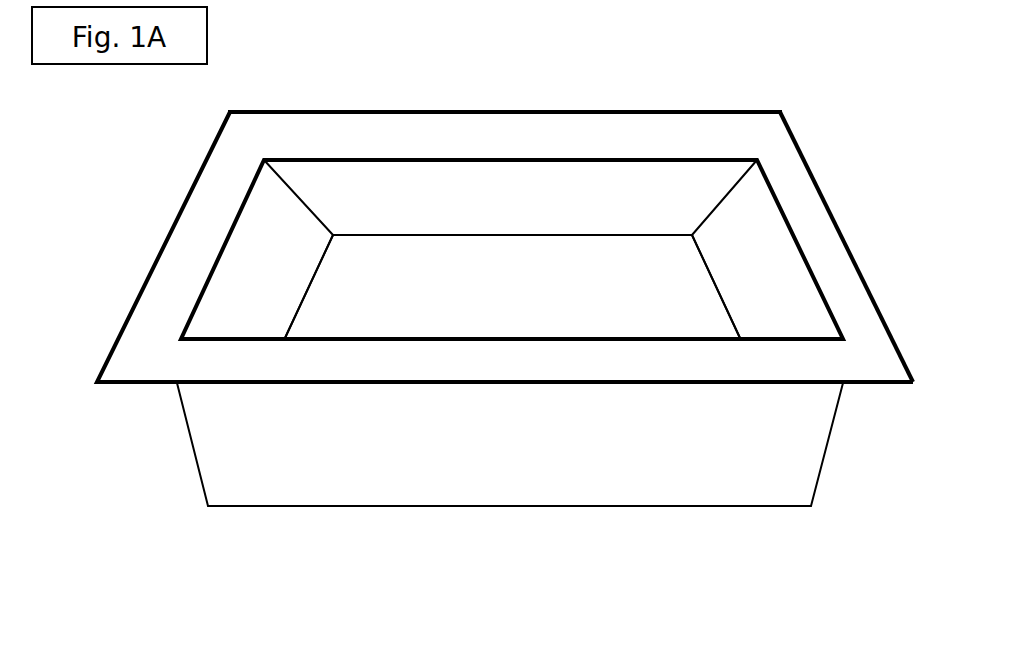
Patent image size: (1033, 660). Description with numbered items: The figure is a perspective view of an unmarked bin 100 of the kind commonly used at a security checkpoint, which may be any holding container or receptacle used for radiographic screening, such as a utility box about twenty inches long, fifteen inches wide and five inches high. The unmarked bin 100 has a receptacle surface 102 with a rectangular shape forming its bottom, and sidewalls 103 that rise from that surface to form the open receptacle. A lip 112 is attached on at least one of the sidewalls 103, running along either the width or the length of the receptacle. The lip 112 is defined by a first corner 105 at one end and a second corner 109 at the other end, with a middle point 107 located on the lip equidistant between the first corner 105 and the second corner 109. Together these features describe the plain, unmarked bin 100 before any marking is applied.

The unmarked bin 100 is at (100, 505).
The receptacle surface 102 is at (512, 286).
The sidewalls 103 is at (259, 273).
The first corner 105 is at (252, 133).
The middle point 107 is at (503, 133).
The second corner 109 is at (752, 132).
The lip 112 is at (812, 212).